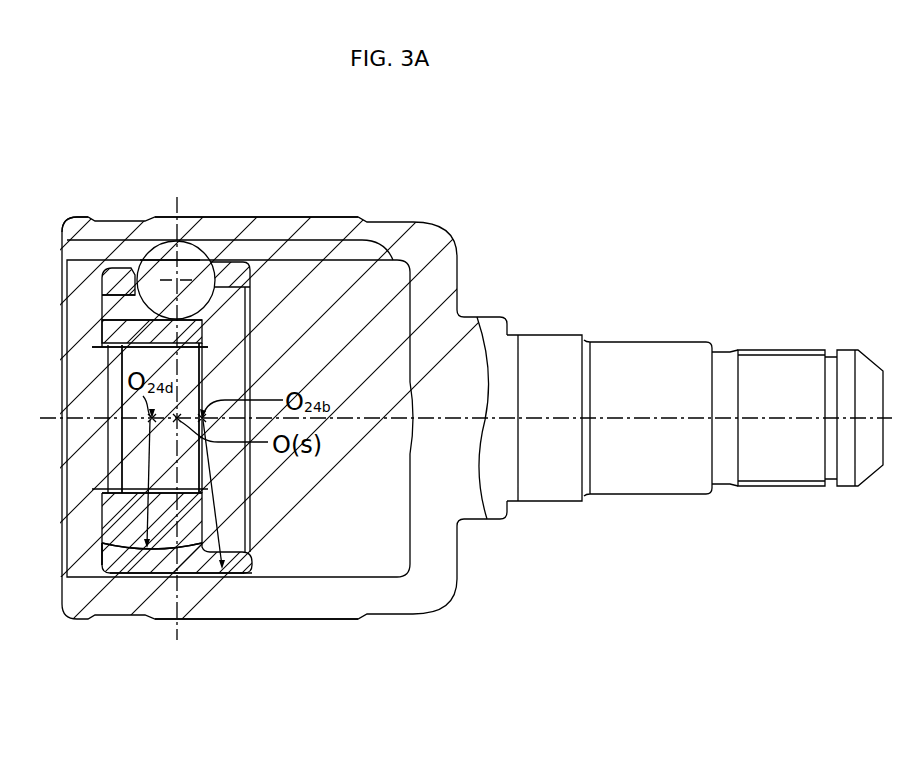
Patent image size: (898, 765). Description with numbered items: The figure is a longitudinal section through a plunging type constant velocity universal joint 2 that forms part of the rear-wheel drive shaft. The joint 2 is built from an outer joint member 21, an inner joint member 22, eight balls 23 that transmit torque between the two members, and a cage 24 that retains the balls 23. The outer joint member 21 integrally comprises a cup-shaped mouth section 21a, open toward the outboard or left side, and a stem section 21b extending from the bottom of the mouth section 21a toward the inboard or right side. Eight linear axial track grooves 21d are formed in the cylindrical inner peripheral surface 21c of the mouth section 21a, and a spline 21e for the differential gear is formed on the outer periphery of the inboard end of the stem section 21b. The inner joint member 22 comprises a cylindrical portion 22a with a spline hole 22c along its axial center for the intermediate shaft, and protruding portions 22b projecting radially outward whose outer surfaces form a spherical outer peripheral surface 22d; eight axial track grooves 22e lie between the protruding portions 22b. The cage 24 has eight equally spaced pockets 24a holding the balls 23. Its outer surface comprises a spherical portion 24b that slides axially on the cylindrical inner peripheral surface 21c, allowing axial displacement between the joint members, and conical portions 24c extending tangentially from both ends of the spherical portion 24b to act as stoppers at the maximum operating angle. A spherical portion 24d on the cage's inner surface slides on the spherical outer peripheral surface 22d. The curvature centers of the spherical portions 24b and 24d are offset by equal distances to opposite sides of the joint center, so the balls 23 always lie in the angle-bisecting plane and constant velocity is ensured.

The plunging type constant velocity universal joint 2 is at (428, 183).
The outer joint member 21 is at (287, 214).
The mouth section 21a is at (332, 228).
The stem section 21b is at (648, 357).
The cylindrical inner peripheral surface 21c is at (328, 577).
The track groove 21d is at (258, 250).
The spline 21e is at (782, 352).
The inner joint member 22 is at (135, 525).
The cylindrical portion 22a is at (188, 332).
The protruding portion 22b is at (188, 528).
The spline hole 22c is at (188, 345).
The spherical outer peripheral surface 22d is at (166, 558).
The track groove 22e is at (120, 320).
The ball 23 is at (194, 262).
The cage 24 is at (253, 564).
The pocket 24a is at (158, 248).
The spherical portion 24b is at (202, 573).
The conical portion 24c is at (118, 575).
The spherical portion 24d is at (117, 540).